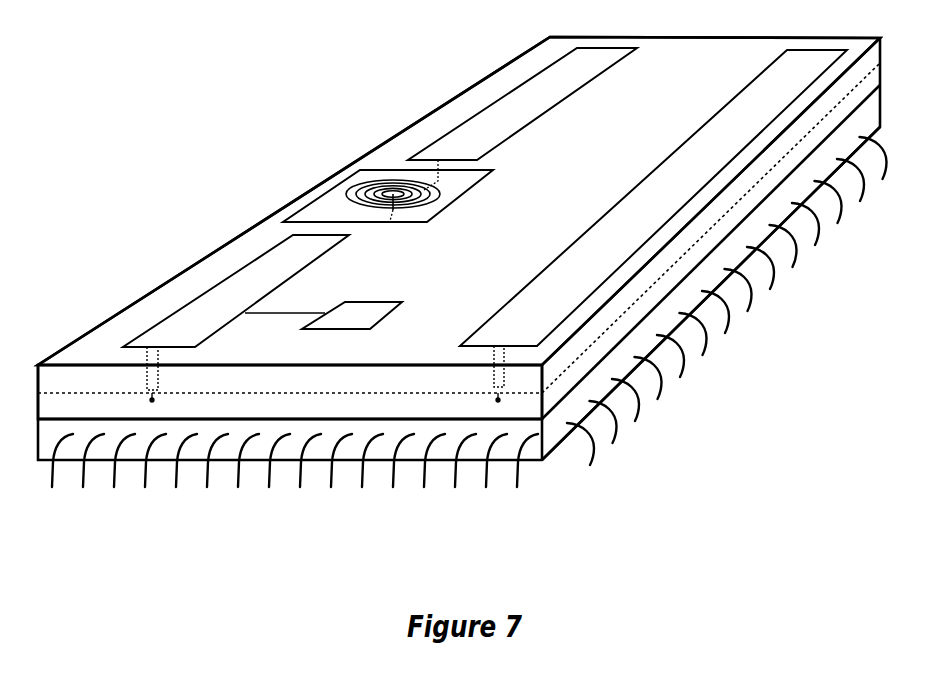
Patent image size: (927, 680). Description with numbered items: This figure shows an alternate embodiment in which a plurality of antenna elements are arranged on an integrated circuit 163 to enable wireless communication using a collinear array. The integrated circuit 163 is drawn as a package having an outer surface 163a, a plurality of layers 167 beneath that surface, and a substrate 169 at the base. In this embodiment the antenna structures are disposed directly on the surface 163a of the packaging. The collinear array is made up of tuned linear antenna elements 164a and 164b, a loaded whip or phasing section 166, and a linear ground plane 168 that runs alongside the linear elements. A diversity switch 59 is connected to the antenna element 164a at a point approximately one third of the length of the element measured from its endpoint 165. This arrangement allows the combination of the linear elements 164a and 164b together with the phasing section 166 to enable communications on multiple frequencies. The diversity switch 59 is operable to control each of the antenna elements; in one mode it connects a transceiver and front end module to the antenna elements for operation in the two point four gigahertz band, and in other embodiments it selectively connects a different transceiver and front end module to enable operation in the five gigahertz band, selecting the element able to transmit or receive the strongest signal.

The integrated circuit 163 is at (294, 197).
The surface 163a is at (459, 201).
The tuned linear antenna element 164a is at (236, 291).
The tuned linear antenna element 164b is at (522, 119).
The endpoint 165 is at (197, 349).
The loaded whip (phasing section) 166 is at (464, 198).
The plurality of layers 167 is at (290, 392).
The linear ground plane 168 is at (653, 226).
The substrate 169 is at (459, 241).
The diversity switch 59 is at (352, 315).